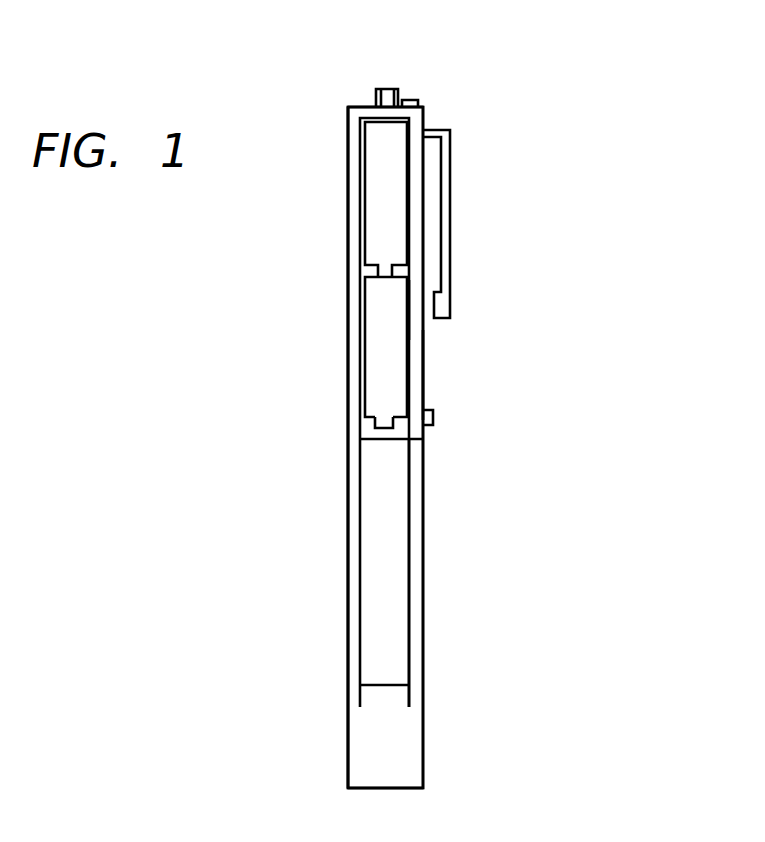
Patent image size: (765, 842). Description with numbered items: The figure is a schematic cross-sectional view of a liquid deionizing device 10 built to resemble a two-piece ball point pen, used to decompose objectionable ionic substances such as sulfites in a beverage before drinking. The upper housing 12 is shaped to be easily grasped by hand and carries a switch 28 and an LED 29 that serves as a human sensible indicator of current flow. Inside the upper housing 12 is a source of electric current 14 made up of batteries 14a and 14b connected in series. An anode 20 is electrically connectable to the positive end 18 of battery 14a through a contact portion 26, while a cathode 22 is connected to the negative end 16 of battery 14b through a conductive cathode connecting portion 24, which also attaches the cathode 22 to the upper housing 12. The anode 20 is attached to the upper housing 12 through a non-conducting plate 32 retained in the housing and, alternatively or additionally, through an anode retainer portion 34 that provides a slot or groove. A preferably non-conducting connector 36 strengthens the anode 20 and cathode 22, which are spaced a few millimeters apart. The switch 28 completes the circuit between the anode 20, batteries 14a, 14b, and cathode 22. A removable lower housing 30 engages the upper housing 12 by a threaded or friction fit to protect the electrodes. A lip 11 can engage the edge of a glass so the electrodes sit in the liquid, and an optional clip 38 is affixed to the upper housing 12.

The liquid deionizing device 10 is at (562, 163).
The lip 11 is at (452, 277).
The upper housing 12 is at (423, 345).
The source of electric current 14 is at (318, 247).
The battery 14a is at (425, 110).
The battery 14b is at (397, 308).
The negative end 16 is at (365, 277).
The positive end 18 is at (360, 152).
The anode 20 is at (357, 612).
The cathode 22 is at (412, 598).
The cathode connecting portion 24 is at (393, 428).
The contact portion 26 is at (372, 106).
The switch 28 is at (387, 100).
The LED 29 is at (407, 99).
The removable lower housing 30 is at (423, 747).
The plate 32 is at (368, 439).
The anode retainer portion 34 is at (358, 317).
The connector 36 is at (375, 687).
The clip 38 is at (433, 418).